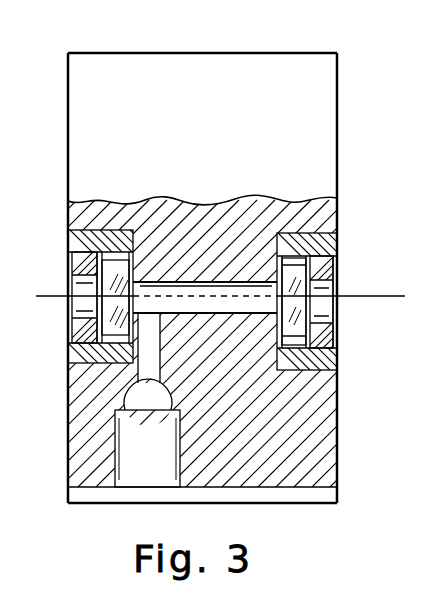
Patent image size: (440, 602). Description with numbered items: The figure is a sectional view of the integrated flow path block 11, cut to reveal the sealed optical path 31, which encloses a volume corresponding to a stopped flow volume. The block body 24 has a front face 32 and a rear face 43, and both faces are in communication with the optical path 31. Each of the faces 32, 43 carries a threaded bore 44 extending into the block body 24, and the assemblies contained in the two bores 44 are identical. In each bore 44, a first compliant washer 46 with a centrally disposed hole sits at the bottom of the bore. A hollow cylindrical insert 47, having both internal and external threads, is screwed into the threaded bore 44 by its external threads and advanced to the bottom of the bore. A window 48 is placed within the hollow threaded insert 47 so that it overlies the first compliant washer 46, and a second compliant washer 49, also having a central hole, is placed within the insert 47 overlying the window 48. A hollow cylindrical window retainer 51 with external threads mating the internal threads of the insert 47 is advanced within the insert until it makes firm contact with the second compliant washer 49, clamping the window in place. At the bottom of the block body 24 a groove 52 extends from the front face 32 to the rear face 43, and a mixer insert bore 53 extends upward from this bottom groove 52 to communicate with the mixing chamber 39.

The integrated flow path block 11 is at (302, 43).
The block body 24 is at (165, 83).
The optical path 31 is at (373, 298).
The front face 32 is at (68, 120).
The mixing chamber 39 is at (160, 405).
The rear face 43 is at (337, 137).
The threaded bore 44 is at (68, 243).
The first compliant washer 46 is at (137, 278).
The hollow cylindrical insert 47 is at (68, 390).
The window 48 is at (120, 262).
The second compliant washer 49 is at (107, 250).
The window retainer 51 is at (72, 265).
The groove 52 is at (268, 487).
The mixer insert bore 53 is at (176, 463).